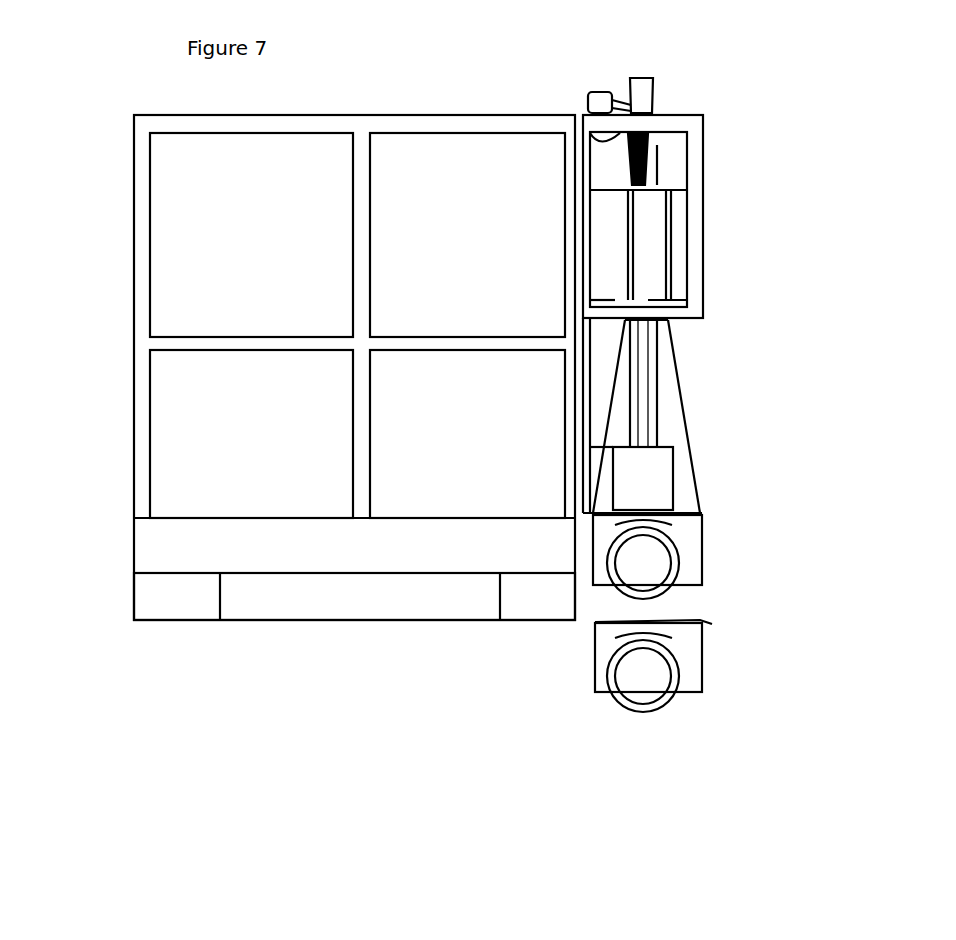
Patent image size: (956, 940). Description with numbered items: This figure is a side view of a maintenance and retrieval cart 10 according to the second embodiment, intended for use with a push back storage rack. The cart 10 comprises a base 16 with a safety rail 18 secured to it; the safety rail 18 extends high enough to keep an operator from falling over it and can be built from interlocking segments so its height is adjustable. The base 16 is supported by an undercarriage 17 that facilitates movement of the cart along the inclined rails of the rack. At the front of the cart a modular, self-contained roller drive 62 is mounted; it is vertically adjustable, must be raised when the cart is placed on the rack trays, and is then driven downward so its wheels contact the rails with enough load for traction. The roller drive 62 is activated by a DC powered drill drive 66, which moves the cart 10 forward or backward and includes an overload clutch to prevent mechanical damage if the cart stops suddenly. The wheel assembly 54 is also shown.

The maintenance and retrieval cart 10 is at (368, 652).
The base 16 is at (248, 567).
The undercarriage 17 is at (133, 573).
The safety rail 18 is at (138, 137).
The caster wheel 54 is at (680, 553).
The roller drive 62 is at (668, 323).
The drill drive 66 is at (652, 87).